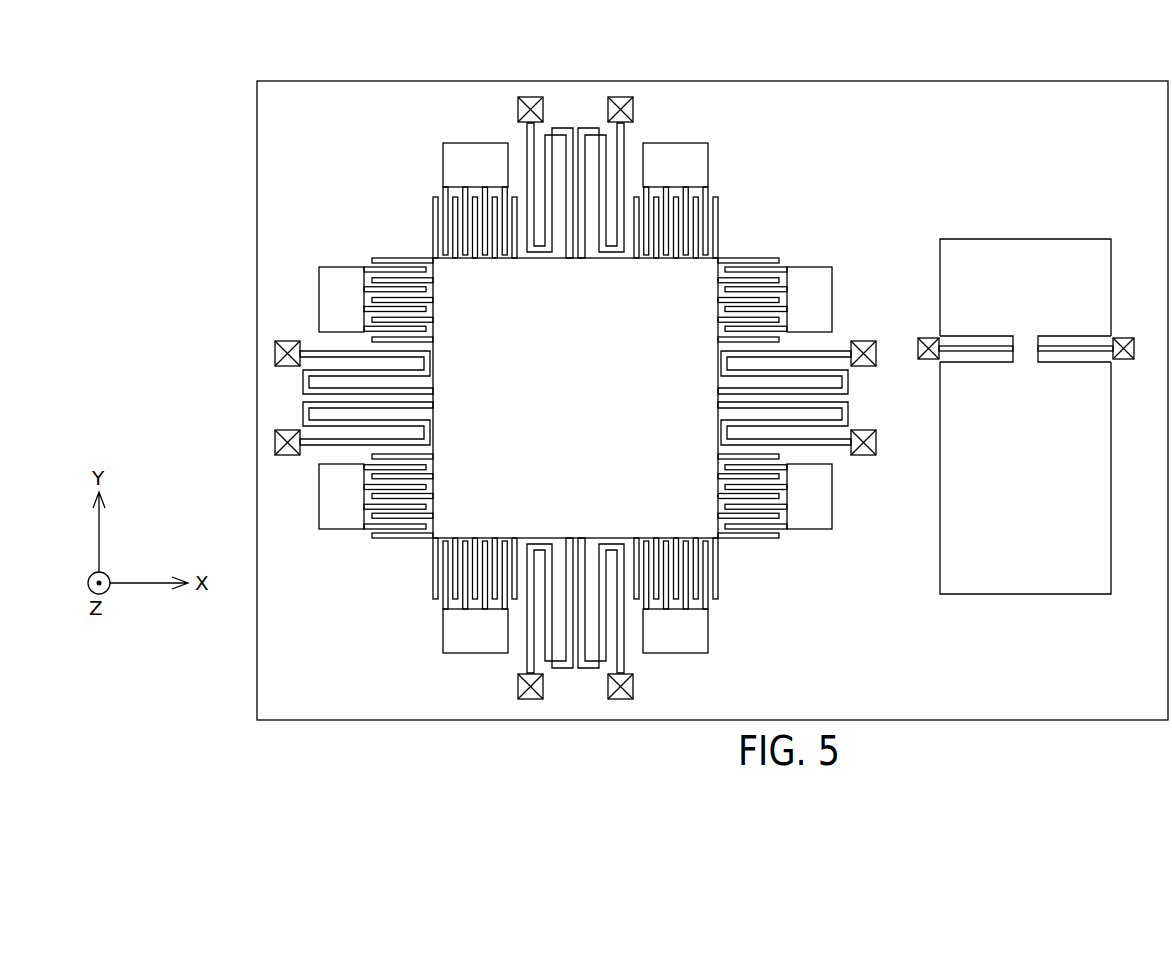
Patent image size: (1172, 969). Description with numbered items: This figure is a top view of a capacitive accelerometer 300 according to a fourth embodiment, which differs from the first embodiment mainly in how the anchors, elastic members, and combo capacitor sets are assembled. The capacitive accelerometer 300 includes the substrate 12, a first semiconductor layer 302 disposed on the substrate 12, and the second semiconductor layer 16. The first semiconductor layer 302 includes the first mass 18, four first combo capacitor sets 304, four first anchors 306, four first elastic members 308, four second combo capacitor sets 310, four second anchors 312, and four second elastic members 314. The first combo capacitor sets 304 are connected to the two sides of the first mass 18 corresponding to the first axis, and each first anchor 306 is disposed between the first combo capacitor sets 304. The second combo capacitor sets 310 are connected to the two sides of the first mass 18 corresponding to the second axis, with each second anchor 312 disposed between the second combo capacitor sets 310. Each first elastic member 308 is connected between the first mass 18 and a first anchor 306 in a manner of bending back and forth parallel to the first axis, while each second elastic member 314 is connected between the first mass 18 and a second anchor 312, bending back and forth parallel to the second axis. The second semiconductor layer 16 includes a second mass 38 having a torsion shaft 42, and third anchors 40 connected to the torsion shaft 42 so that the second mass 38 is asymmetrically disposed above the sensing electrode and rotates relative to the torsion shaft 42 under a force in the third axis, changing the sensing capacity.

The capacitive accelerometer 300 is at (212, 108).
The substrate 12 is at (300, 81).
The first semiconductor layer 302 is at (842, 136).
The first mass 18 is at (575, 403).
The first combo capacitor set 304 is at (352, 281).
The first anchor 306 is at (274, 348).
The first elastic member 308 is at (305, 374).
The second combo capacitor set 310 is at (457, 148).
The second anchor 312 is at (528, 97).
The second elastic member 314 is at (548, 128).
The second semiconductor layer 16 is at (1054, 208).
The second mass 38 is at (1078, 239).
The third anchor 40 is at (929, 338).
The torsion shaft 42 is at (1080, 352).